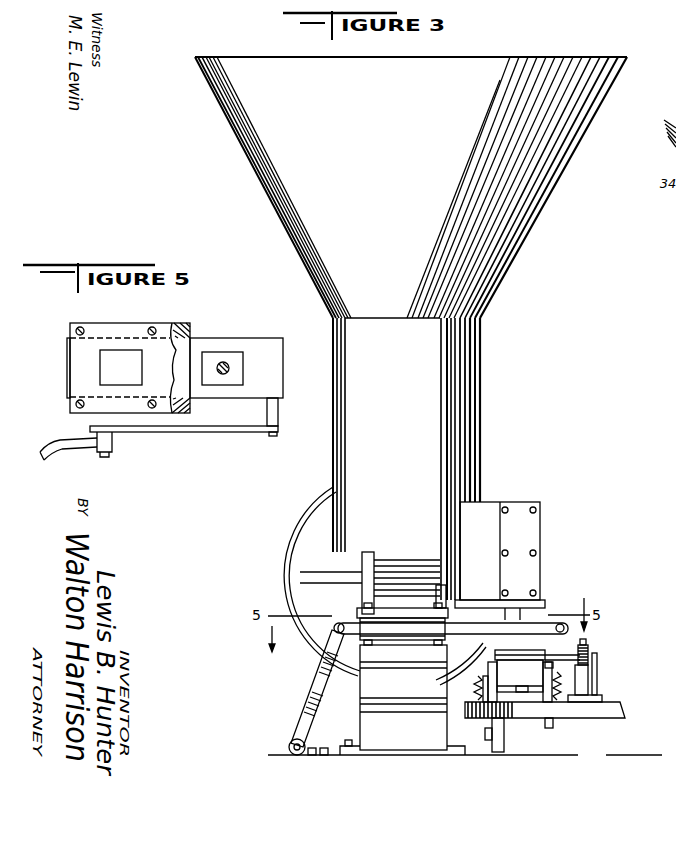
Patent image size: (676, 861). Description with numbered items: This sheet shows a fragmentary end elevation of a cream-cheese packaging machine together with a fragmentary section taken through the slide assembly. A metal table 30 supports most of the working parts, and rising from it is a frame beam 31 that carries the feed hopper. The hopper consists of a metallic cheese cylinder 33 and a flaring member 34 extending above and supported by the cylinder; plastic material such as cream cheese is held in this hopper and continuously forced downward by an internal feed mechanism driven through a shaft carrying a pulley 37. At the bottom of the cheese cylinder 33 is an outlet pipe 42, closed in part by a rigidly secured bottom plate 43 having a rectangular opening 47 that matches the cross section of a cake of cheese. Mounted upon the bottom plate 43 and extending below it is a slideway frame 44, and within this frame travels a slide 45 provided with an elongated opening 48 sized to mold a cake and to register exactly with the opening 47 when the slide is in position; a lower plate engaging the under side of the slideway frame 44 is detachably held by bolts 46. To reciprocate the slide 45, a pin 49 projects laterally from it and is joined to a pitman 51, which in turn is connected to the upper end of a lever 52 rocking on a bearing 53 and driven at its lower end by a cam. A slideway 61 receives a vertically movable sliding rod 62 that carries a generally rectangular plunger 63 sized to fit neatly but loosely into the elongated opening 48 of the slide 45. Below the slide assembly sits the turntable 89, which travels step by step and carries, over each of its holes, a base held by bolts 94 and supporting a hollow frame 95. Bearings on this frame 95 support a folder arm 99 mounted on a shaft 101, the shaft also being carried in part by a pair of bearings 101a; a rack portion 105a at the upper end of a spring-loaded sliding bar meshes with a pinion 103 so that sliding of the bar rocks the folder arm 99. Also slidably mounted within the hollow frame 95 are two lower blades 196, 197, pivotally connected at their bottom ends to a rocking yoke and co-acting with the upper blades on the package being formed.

In FIG. 3, the table 30 is at (564, 754).
In FIG. 3, the frame beam 31 is at (366, 713).
In FIG. 3, the cheese cylinder 33 is at (468, 357).
In FIG. 3, the flaring member 34 is at (303, 244).
In FIG. 3, the pulley 37 is at (306, 516).
In FIG. 3, the outlet pipe 42 is at (376, 558).
In FIG. 3, the bottom plate 43 is at (394, 612).
In FIG. 5, the bottom plate 43 is at (93, 344).
In FIG. 3, the slideway frame 44 is at (363, 673).
In FIG. 3, the slide 45 is at (472, 637).
In FIG. 5, the slide 45 is at (262, 350).
In FIG. 5, the bolts 46 is at (81, 328).
In FIG. 5, the opening 47 is at (121, 367).
In FIG. 5, the elongated opening 48 is at (210, 356).
In FIG. 5, the pin 49 is at (279, 409).
In FIG. 3, the pitman 51 is at (350, 630).
In FIG. 5, the pitman 51 is at (236, 432).
In FIG. 3, the lever 52 is at (318, 680).
In FIG. 3, the bearing 53 is at (291, 741).
In FIG. 3, the slideway 61 is at (540, 525).
In FIG. 3, the sliding rod 62 is at (530, 606).
In FIG. 5, the plunger 63 is at (229, 369).
In FIG. 3, the turntable 89 is at (610, 706).
In FIG. 3, the bolts 94 is at (526, 692).
In FIG. 3, the hollow frame 95 is at (478, 690).
In FIG. 3, the folder arm 99 is at (520, 671).
In FIG. 3, the shaft 101 is at (565, 655).
In FIG. 3, the bearings 101a is at (599, 673).
In FIG. 3, the pinion 103 is at (590, 652).
In FIG. 3, the rack portion 105a is at (586, 641).
In FIG. 3, the lower blade 196 is at (492, 727).
In FIG. 3, the lower blade 197 is at (553, 666).